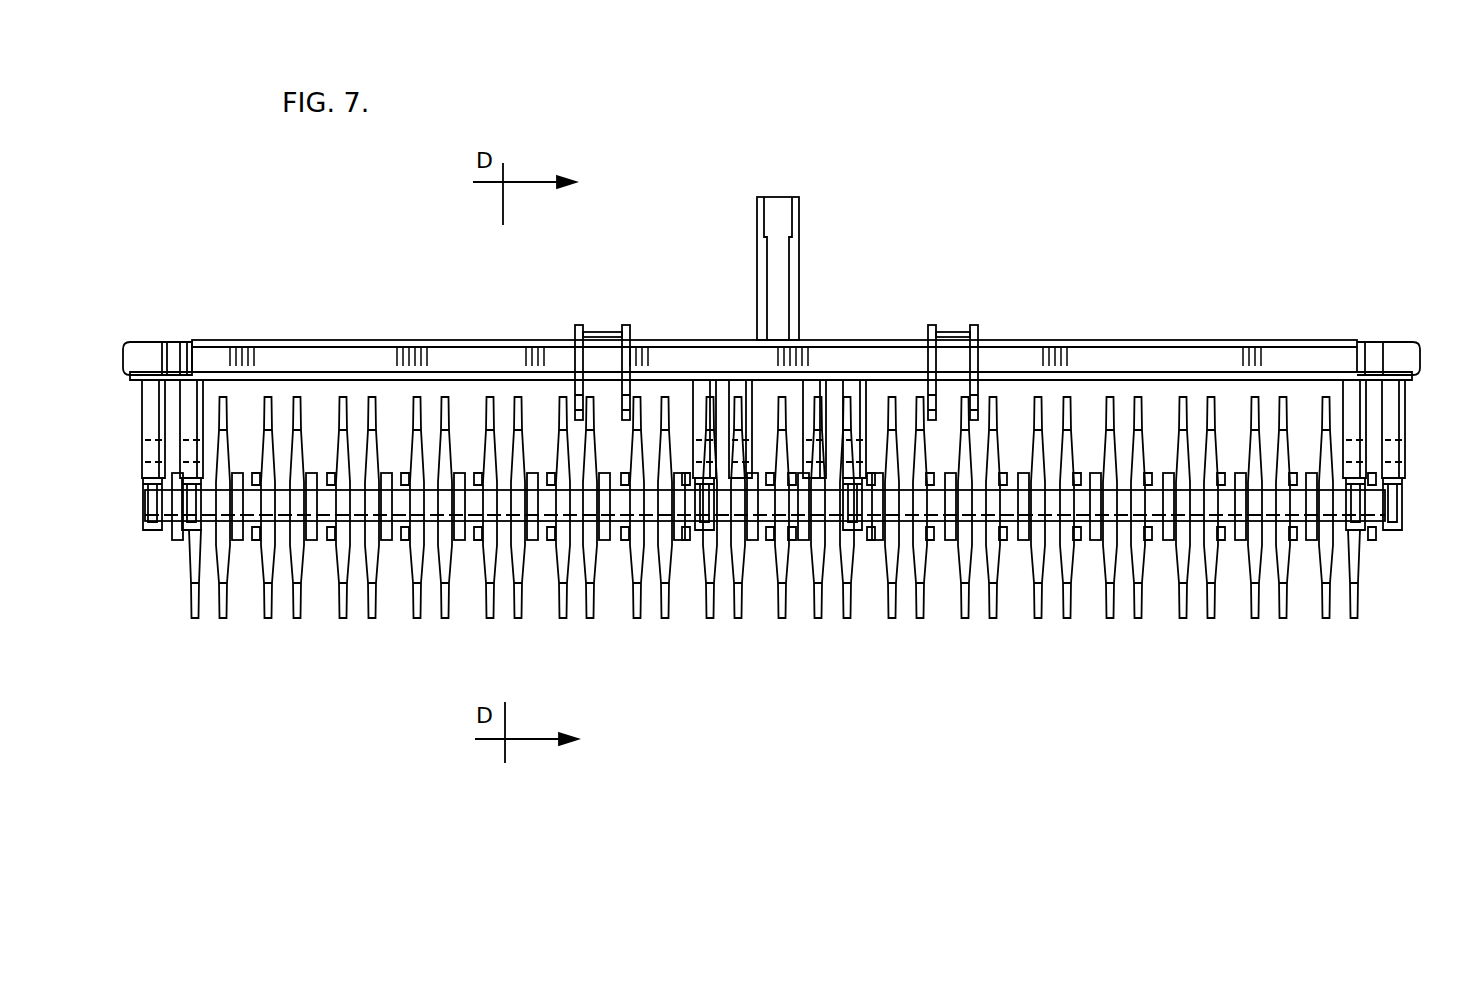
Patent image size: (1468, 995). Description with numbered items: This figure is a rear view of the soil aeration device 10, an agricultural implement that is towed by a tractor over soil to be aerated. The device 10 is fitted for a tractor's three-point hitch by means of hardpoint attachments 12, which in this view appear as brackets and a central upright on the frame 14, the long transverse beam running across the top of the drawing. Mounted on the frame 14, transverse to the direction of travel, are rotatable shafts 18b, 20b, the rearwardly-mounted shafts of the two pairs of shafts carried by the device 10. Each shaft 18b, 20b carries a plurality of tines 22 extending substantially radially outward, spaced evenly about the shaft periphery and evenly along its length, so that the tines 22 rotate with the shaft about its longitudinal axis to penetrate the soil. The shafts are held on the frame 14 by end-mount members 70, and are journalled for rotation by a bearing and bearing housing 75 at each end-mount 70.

The soil aeration device 10 is at (1096, 183).
The hardpoint attachments 12 is at (803, 214).
The frame 14 is at (1187, 356).
The rearwardly-mounted rotatable shaft 18b is at (1126, 512).
The rearwardly-mounted rotatable shaft 20b is at (650, 517).
The tines 22 is at (352, 612).
The end-mount members 70 is at (150, 505).
The bearing and bearing housing 75 is at (741, 378).